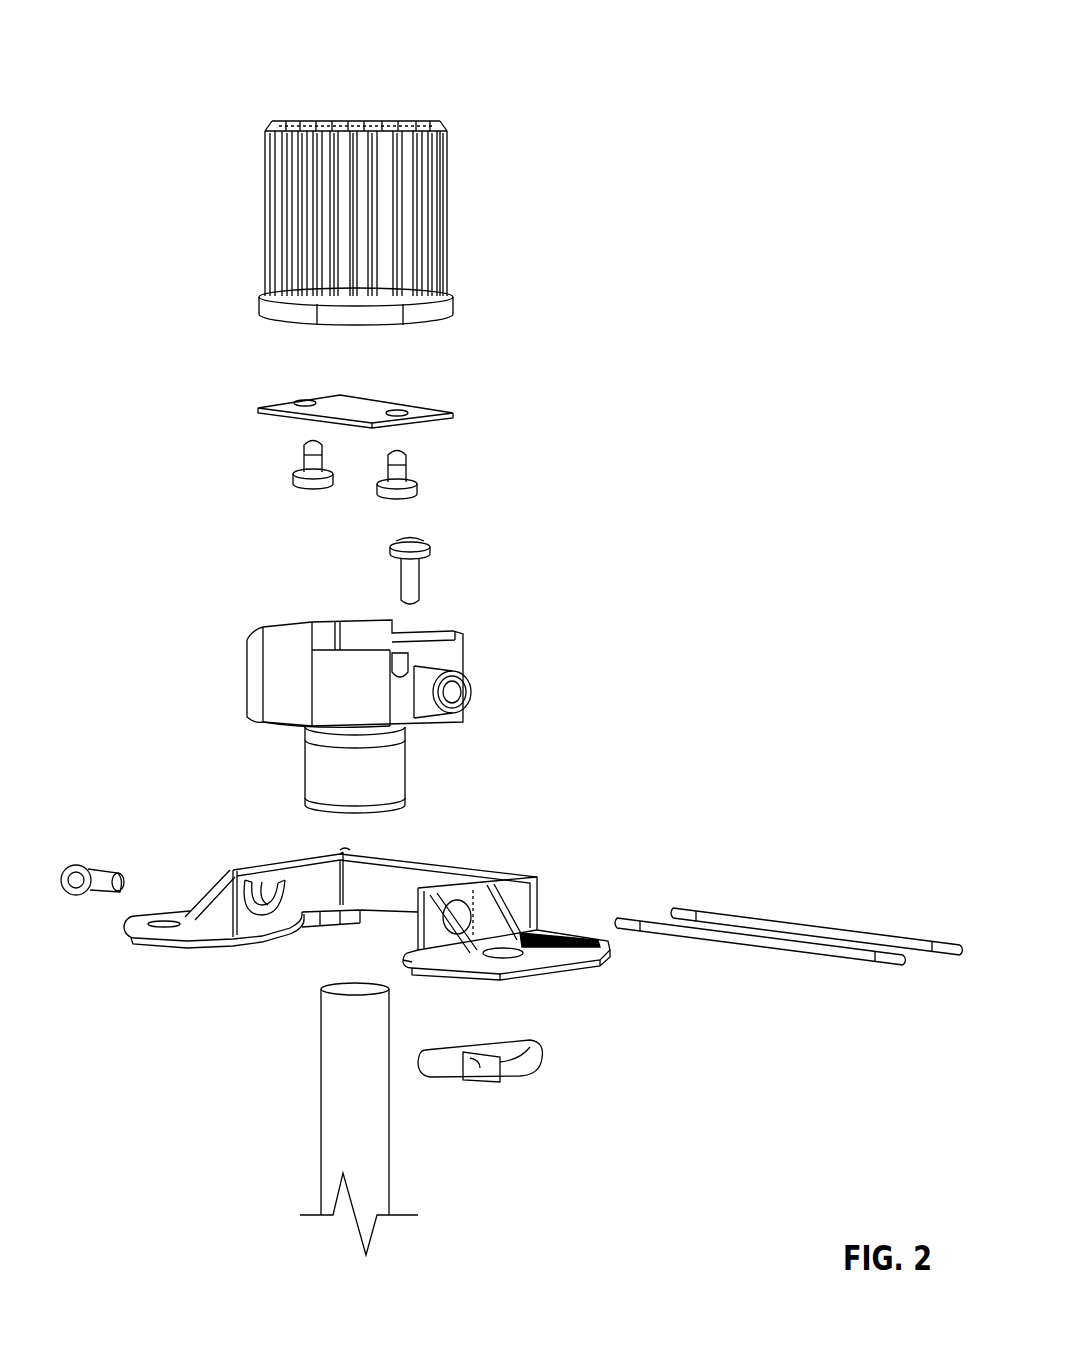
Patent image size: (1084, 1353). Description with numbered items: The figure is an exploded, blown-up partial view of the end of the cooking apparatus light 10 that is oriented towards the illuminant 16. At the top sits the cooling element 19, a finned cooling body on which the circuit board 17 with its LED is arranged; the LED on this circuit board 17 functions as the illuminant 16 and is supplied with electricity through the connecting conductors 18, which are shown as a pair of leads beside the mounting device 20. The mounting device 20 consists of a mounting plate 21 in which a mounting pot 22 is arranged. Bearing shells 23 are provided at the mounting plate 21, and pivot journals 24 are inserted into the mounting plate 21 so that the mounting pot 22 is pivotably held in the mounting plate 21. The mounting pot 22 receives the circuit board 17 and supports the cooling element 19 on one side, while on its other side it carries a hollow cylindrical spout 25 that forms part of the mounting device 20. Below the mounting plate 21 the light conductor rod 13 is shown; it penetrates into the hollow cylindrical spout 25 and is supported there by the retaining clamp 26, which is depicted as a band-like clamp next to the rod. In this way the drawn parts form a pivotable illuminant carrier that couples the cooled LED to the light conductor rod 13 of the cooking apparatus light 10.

The cooking apparatus light 10 is at (718, 177).
The light conductor rod 13 is at (407, 1157).
The illuminant 16 is at (428, 385).
The circuit board 17 is at (432, 403).
The connecting conductor 18 is at (828, 910).
The cooling element 19 is at (437, 112).
The mounting device 20 is at (653, 692).
The mounting plate 21 is at (563, 900).
The mounting pot 22 is at (237, 670).
The bearing shell 23 is at (268, 932).
The pivot journal 24 is at (470, 688).
The hollow cylindrical spout 25 is at (285, 773).
The retaining clamp 26 is at (557, 1063).